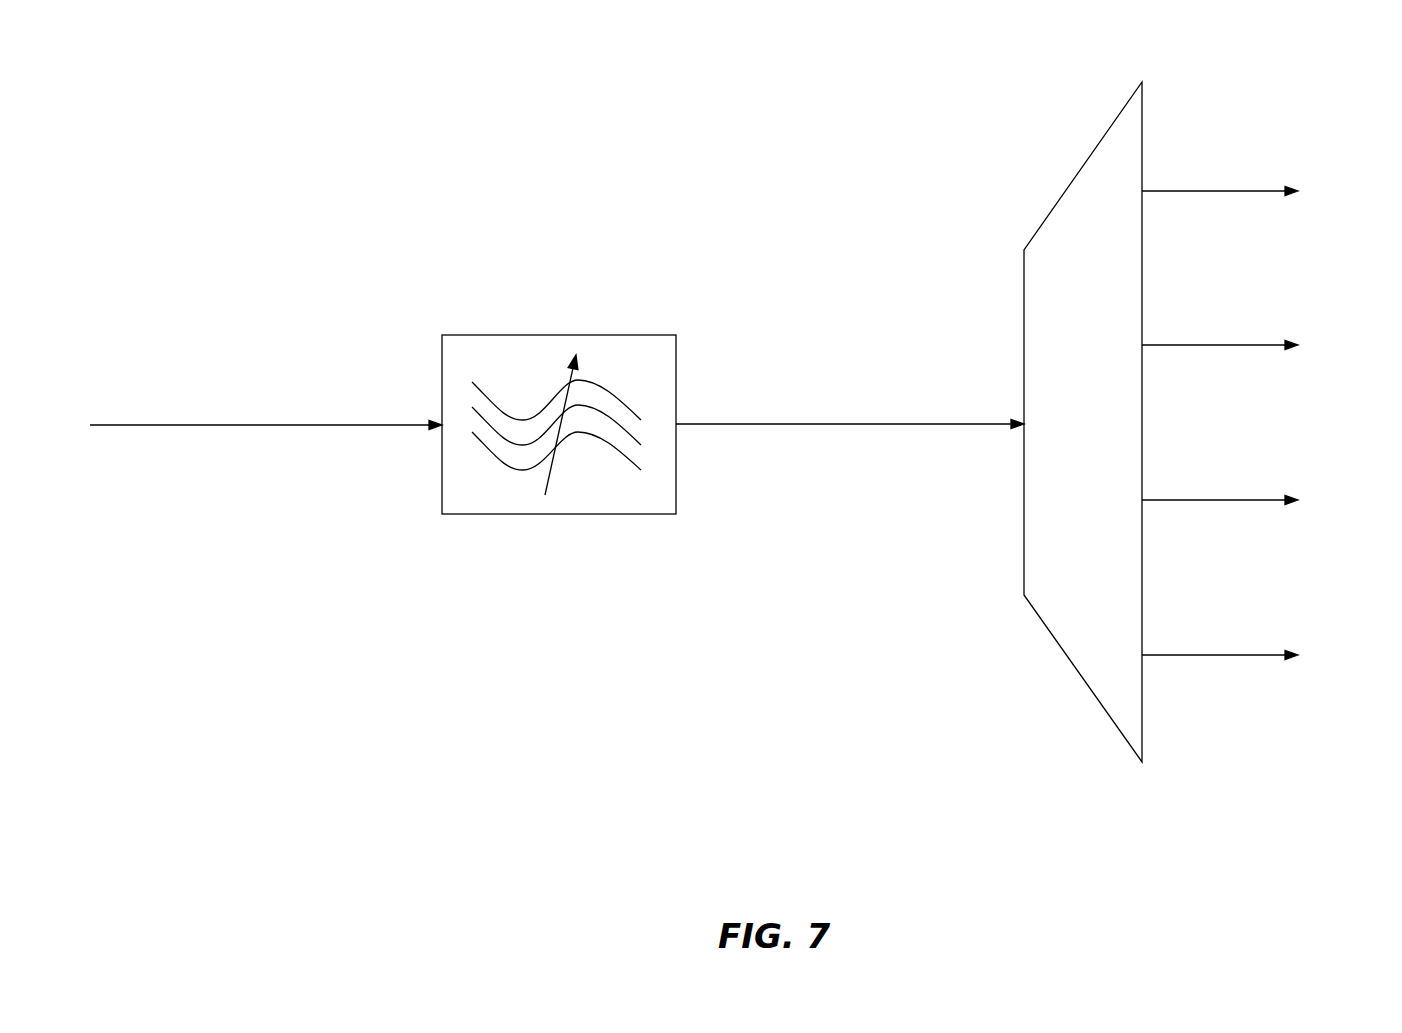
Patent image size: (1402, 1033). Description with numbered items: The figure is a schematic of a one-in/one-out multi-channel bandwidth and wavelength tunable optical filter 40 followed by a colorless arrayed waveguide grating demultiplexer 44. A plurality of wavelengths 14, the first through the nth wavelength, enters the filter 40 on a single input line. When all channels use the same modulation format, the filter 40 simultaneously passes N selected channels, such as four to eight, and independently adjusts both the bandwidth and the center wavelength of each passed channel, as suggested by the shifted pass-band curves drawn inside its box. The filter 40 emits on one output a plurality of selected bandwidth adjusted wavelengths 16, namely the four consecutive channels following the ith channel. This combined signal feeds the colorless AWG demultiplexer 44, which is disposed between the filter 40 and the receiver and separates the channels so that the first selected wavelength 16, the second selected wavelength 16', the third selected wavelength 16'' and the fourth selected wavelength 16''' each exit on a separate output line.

The plurality of wavelengths 14 is at (275, 370).
The one-in/one-out multi-channel BW and wavelength tunable optical filter 40 is at (637, 335).
The selected bandwidth adjusted wavelengths 16 is at (1020, 245).
The selected bandwidth adjusted wavelength λi+2 16' is at (1256, 283).
The selected bandwidth adjusted wavelength λi+3 16'' is at (1259, 437).
The selected bandwidth adjusted wavelength λi+4 16''' is at (1262, 592).
The colorless AWG DEMUX 44 is at (1142, 128).